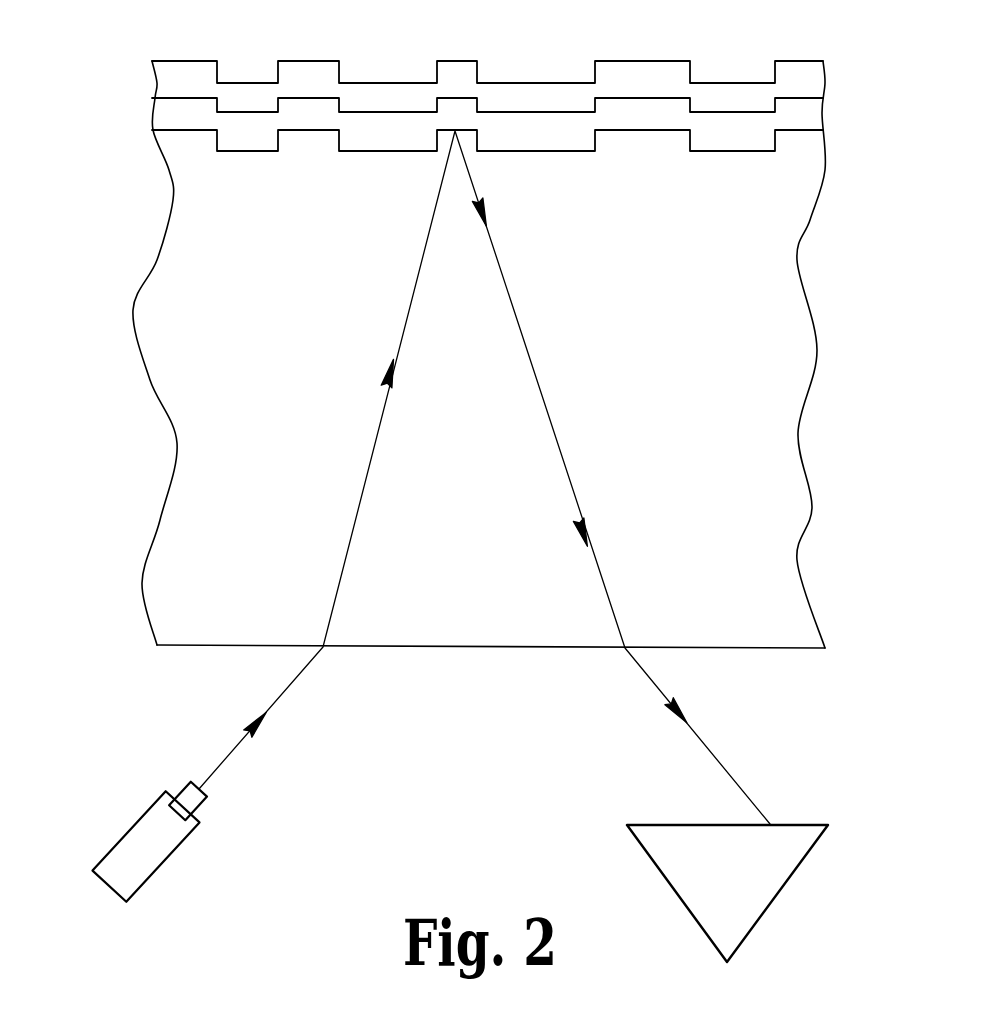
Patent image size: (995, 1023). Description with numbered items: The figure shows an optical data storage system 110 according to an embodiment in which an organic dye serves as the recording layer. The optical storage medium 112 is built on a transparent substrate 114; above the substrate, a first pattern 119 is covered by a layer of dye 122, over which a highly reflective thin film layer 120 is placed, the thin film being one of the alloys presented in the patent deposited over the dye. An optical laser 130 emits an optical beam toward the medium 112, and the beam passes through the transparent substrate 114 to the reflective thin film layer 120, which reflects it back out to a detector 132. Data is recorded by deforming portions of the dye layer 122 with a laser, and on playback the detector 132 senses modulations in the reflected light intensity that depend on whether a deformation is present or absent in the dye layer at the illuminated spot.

The optical data storage system 110 is at (485, 680).
The optical storage medium 112 is at (143, 445).
The transparent substrate 114 is at (725, 490).
The first pattern 119 is at (243, 152).
The highly reflective thin film layer 120 is at (518, 95).
The layer of dye 122 is at (732, 142).
The optical laser 130 is at (167, 862).
The detector 132 is at (765, 905).